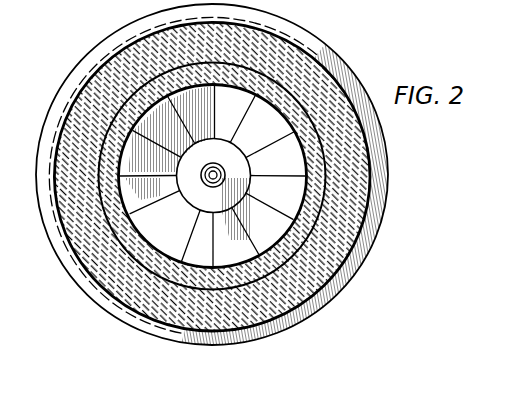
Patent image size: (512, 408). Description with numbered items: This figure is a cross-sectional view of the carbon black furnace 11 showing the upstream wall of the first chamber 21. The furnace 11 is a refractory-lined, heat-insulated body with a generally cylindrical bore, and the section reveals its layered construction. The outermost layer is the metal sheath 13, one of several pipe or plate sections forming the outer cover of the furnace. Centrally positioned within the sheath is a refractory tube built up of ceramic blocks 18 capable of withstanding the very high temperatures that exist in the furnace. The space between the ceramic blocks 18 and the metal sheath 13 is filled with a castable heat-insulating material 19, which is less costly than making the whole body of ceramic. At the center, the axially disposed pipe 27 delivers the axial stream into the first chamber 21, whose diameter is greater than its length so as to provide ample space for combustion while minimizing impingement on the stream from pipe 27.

The furnace 11 is at (333, 66).
The metal sheath section 13 is at (91, 78).
The castable heat-insulating material 19 is at (113, 65).
The ceramic blocks 18 is at (163, 259).
The first chamber 21 is at (238, 260).
The pipe 27 is at (226, 173).